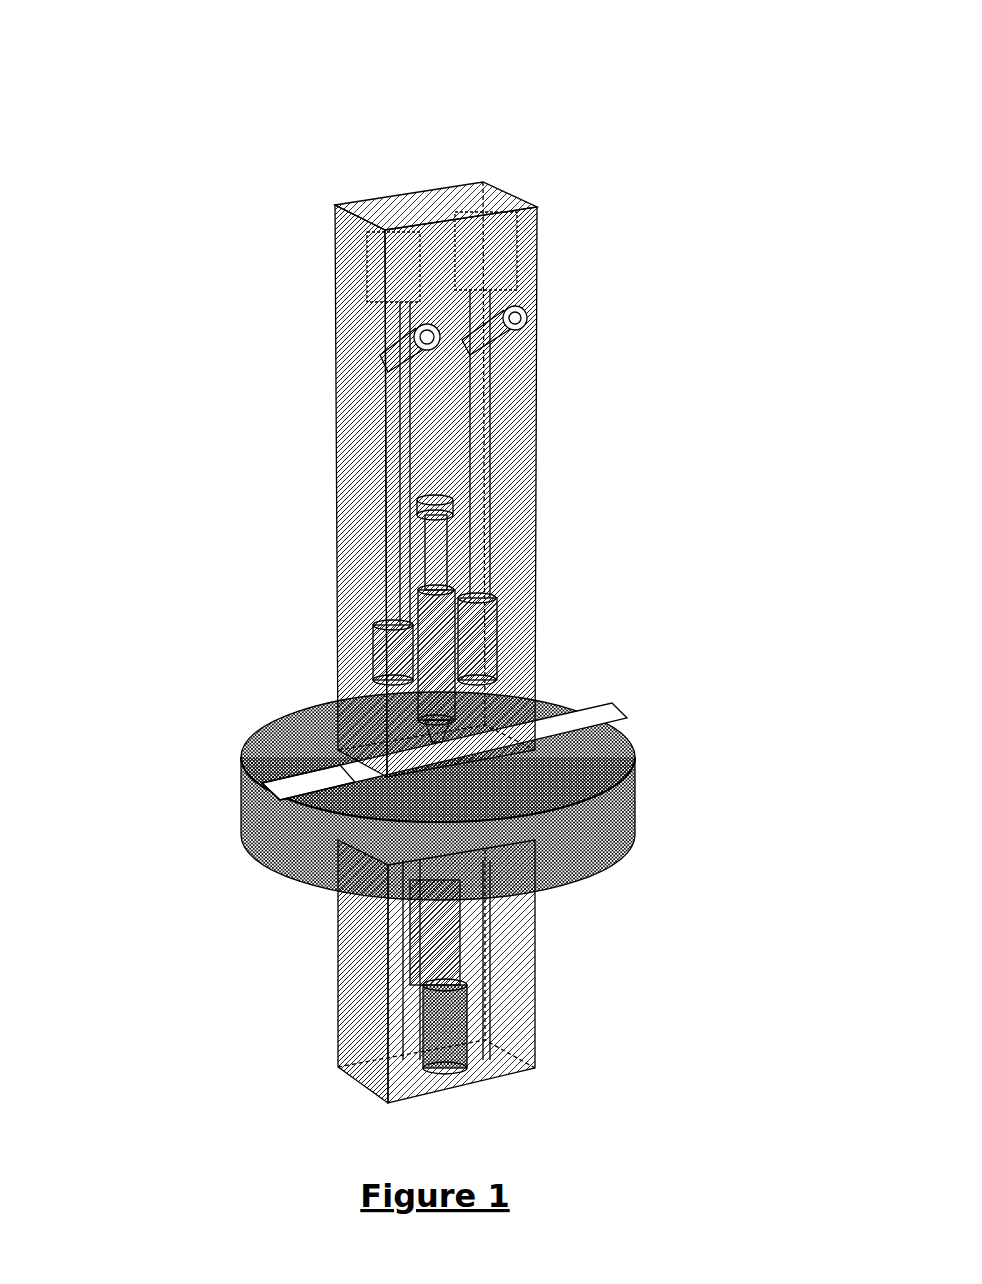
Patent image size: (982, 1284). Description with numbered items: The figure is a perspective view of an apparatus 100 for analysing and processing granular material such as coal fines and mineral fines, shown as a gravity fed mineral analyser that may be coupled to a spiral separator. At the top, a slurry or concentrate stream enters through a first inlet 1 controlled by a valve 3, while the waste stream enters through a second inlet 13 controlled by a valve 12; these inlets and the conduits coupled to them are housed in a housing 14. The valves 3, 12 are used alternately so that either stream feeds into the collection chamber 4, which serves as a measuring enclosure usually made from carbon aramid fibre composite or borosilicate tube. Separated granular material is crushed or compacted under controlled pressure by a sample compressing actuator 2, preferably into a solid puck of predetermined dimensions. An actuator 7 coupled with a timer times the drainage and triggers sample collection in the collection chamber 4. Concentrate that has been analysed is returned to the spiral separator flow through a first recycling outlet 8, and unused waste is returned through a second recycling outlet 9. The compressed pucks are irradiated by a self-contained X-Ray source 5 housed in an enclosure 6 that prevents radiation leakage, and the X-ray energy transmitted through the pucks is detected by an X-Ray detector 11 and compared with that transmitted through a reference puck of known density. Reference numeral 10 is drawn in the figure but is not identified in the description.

The apparatus 100 is at (437, 180).
The first inlet 1 is at (590, 282).
The sample compressing actuator 2 is at (526, 505).
The valve 3 is at (570, 602).
The collection chamber 4 is at (551, 663).
The X-Ray source 5 is at (514, 735).
The enclosure 6 is at (524, 796).
The actuator 7 is at (529, 989).
The first recycling outlet 8 is at (578, 960).
The second recycling outlet 9 is at (361, 971).
The lower channel 10 is at (260, 935).
The X-Ray detector 11 is at (236, 742).
The valve 12 is at (307, 616).
The second inlet 13 is at (327, 304).
The housing 14 is at (334, 462).